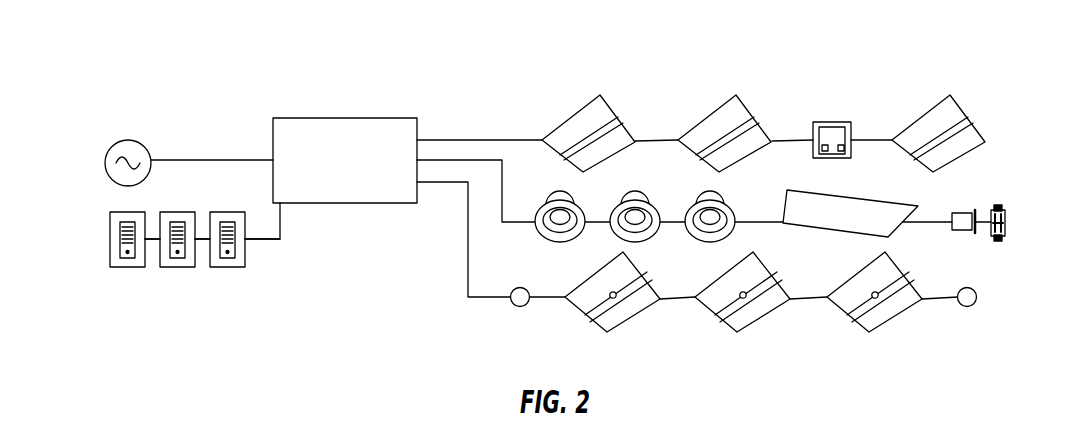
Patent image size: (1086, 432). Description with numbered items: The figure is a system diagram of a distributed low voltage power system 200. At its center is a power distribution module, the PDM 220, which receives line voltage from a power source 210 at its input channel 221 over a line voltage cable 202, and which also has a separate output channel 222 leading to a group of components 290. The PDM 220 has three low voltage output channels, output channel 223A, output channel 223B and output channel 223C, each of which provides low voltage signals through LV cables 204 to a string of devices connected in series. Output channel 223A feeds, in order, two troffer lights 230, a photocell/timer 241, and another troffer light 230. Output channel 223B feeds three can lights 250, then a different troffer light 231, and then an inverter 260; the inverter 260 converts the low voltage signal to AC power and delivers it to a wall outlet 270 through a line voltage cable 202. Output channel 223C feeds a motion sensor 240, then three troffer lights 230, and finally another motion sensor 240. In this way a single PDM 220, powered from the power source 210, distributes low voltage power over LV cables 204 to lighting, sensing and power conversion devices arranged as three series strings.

The DVLP system 200 is at (149, 46).
The AC power source 210 is at (126, 141).
The line voltage cable 202 is at (192, 160).
The LV cables 204 is at (470, 235).
The PDM 220 is at (344, 110).
The power input 221 is at (272, 158).
The data input 222 is at (281, 206).
The output channel 223A is at (420, 139).
The output channel 223B is at (420, 159).
The output channel 223C is at (420, 183).
The troffer lights 230 is at (570, 118).
The troffer light 231 is at (860, 198).
The motion sensor 240 is at (516, 289).
The photocell/timer 241 is at (830, 122).
The can lights 250 is at (560, 242).
The inverter 260 is at (962, 232).
The wall outlet 270 is at (1008, 222).
The servers 290 is at (125, 268).